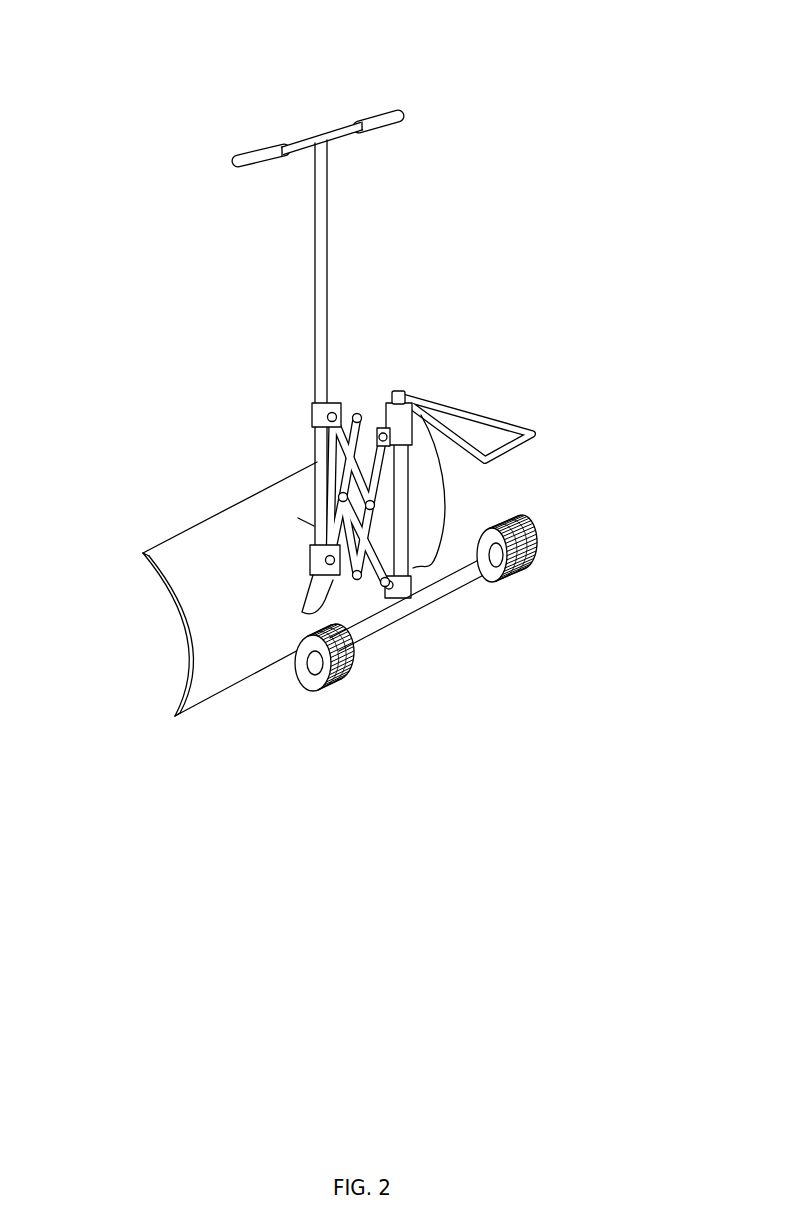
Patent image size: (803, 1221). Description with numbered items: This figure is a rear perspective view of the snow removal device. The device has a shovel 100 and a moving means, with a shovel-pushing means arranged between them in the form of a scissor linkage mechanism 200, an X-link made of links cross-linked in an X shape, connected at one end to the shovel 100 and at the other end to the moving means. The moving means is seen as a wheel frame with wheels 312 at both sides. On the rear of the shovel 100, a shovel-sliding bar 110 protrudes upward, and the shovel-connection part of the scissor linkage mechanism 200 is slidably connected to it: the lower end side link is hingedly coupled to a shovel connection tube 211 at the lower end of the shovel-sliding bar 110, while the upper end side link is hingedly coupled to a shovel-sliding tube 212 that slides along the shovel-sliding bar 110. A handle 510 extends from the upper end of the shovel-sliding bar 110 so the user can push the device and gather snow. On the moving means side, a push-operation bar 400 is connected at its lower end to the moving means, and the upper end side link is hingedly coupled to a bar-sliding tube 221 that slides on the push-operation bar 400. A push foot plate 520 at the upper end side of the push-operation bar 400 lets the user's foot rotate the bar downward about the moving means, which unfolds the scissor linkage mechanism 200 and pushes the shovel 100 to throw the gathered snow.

The shovel 100 is at (177, 641).
The shovel-sliding bar 110 is at (316, 525).
The scissor linkage mechanism 200 is at (340, 494).
The shovel connection tube 211 is at (310, 556).
The shovel-sliding tube 212 is at (313, 411).
The bar-sliding tube 221 is at (403, 404).
The wheels 312 is at (317, 677).
The push-operation bar 400 is at (412, 530).
The handle 510 is at (303, 121).
The push foot plate 520 is at (516, 411).